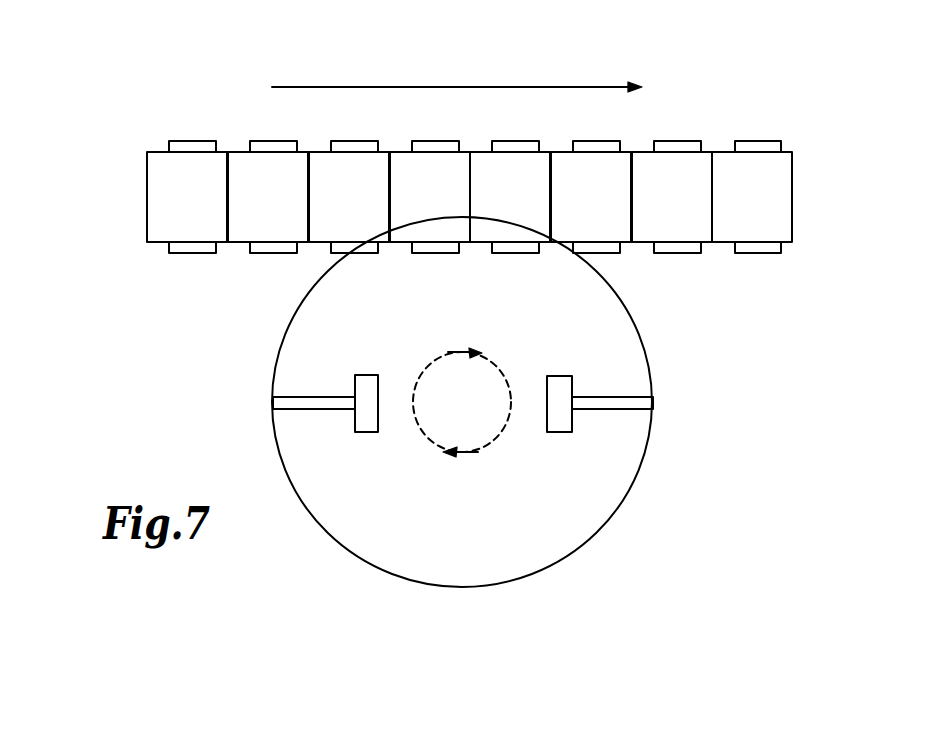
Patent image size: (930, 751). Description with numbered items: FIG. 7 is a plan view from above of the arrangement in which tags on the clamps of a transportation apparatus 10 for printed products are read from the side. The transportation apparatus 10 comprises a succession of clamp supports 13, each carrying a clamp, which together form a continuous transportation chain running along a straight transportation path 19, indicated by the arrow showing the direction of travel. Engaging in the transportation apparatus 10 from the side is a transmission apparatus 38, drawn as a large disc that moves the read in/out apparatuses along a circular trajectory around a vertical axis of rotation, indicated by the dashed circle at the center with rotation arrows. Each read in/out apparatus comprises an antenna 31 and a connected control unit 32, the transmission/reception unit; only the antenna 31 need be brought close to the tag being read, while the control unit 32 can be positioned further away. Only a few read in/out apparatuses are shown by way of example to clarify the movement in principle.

The transportation apparatus 10 is at (122, 193).
The clamp support 13 is at (755, 179).
The transportation path 19 is at (510, 82).
The antenna 31 is at (317, 405).
The control unit 32 is at (365, 422).
The transmission apparatus 38 is at (617, 512).